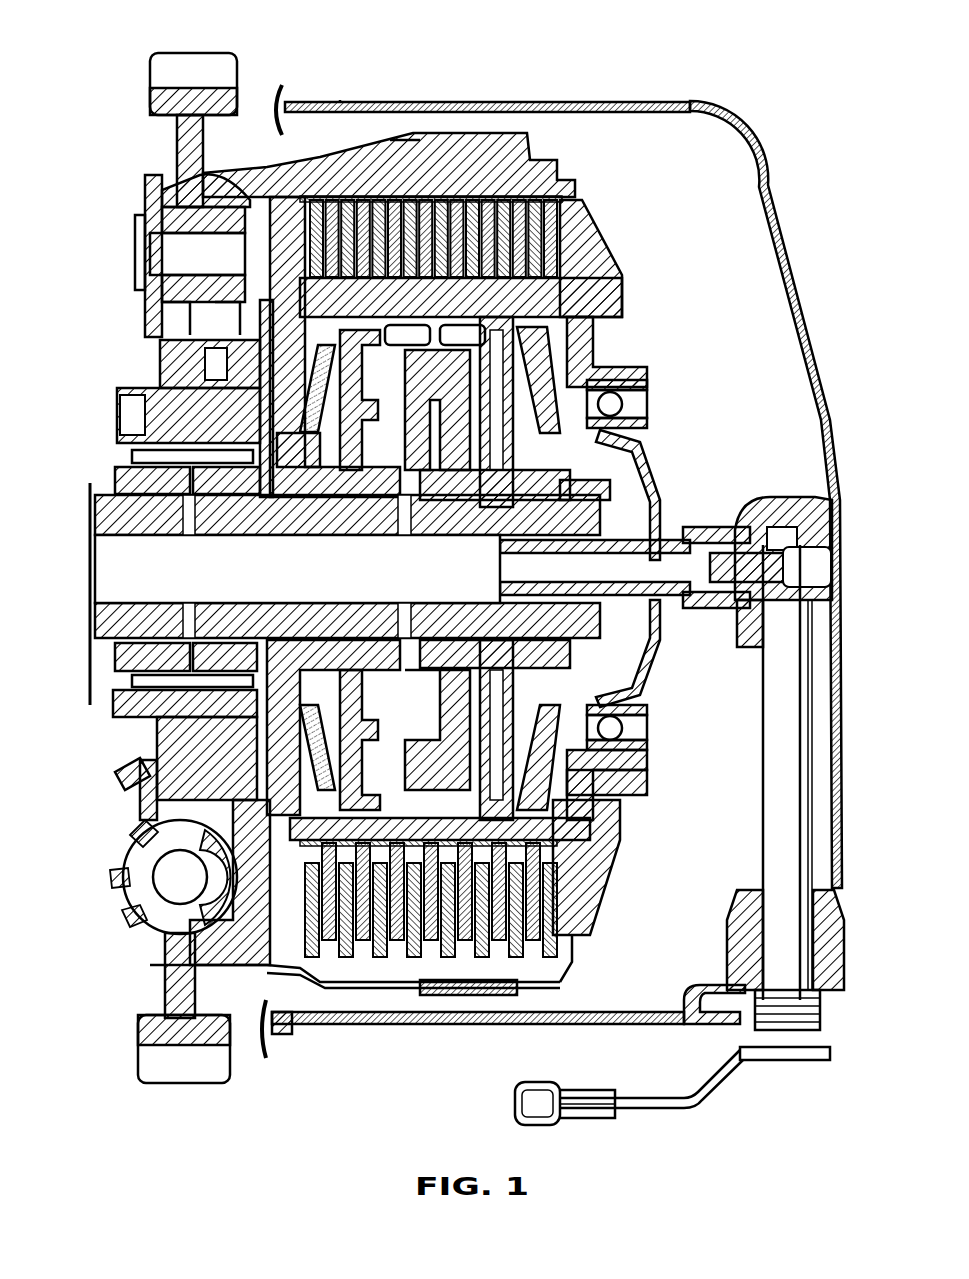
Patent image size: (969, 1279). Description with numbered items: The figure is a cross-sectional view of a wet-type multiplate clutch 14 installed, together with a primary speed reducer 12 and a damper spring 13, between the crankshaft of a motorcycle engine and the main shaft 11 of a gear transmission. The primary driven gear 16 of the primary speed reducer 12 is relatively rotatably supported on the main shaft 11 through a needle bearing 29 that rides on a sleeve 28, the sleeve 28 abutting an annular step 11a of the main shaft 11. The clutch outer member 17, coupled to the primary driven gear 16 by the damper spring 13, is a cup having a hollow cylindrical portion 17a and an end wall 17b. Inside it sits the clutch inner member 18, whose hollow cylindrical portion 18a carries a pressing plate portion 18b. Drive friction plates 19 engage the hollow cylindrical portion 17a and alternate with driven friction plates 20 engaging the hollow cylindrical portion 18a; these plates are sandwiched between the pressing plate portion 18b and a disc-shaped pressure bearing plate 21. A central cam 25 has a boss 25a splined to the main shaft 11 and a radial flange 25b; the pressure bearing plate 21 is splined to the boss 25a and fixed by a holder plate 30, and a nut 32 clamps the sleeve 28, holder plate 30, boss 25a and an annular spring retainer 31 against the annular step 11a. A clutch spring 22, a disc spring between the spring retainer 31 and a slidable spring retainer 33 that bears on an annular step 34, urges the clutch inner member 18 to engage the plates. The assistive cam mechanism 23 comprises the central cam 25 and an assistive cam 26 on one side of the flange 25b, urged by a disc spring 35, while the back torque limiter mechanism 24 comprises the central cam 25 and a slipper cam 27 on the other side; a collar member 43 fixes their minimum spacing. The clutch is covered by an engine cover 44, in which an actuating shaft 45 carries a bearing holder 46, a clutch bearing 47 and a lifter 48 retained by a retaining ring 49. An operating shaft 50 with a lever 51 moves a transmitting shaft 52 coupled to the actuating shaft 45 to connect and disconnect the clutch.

The main shaft 11 is at (324, 636).
The annular step 11a is at (118, 748).
The primary speed reducer 12 is at (216, 173).
The damper spring 13 is at (147, 905).
The multiplate clutch 14 is at (632, 268).
The primary driven gear 16 is at (205, 62).
The clutch outer member 17 is at (324, 280).
The hollow cylindrical portion 17a is at (370, 165).
The end wall 17b is at (240, 335).
The clutch inner member 18 is at (521, 186).
The hollow cylindrical portion 18a is at (410, 292).
The pressing plate portion 18b is at (585, 225).
The drive friction plates 19 is at (400, 957).
The driven friction plates 20 is at (495, 957).
The pressure bearing plate 21 is at (282, 247).
The clutch spring 22 is at (642, 378).
The assistive cam mechanism 23 is at (395, 640).
The back torque limiter mechanism 24 is at (460, 462).
The central cam 25 is at (348, 505).
The hollow cylindrical boss 25a is at (405, 470).
The flange 25b is at (480, 720).
The assistive cam 26 is at (340, 680).
The slipper cam 27 is at (538, 430).
The sleeve 28 is at (155, 482).
The needle bearing 29 is at (118, 425).
The holder plate 30 is at (262, 482).
The annular spring retainer 31 is at (612, 718).
The nut 32 is at (634, 482).
The annular spring retainer 33 is at (600, 390).
The annular step 34 is at (535, 320).
The disc spring 35 is at (175, 388).
The collar member 43 is at (435, 347).
The engine cover 44 is at (806, 298).
The actuating shaft 45 is at (665, 522).
The bearing holder 46 is at (655, 632).
The clutch bearing 47 is at (612, 735).
The lifter 48 is at (625, 775).
The retaining ring 49 is at (618, 860).
The operating shaft 50 is at (790, 778).
The lever 51 is at (642, 1110).
The transmitting shaft 52 is at (738, 525).